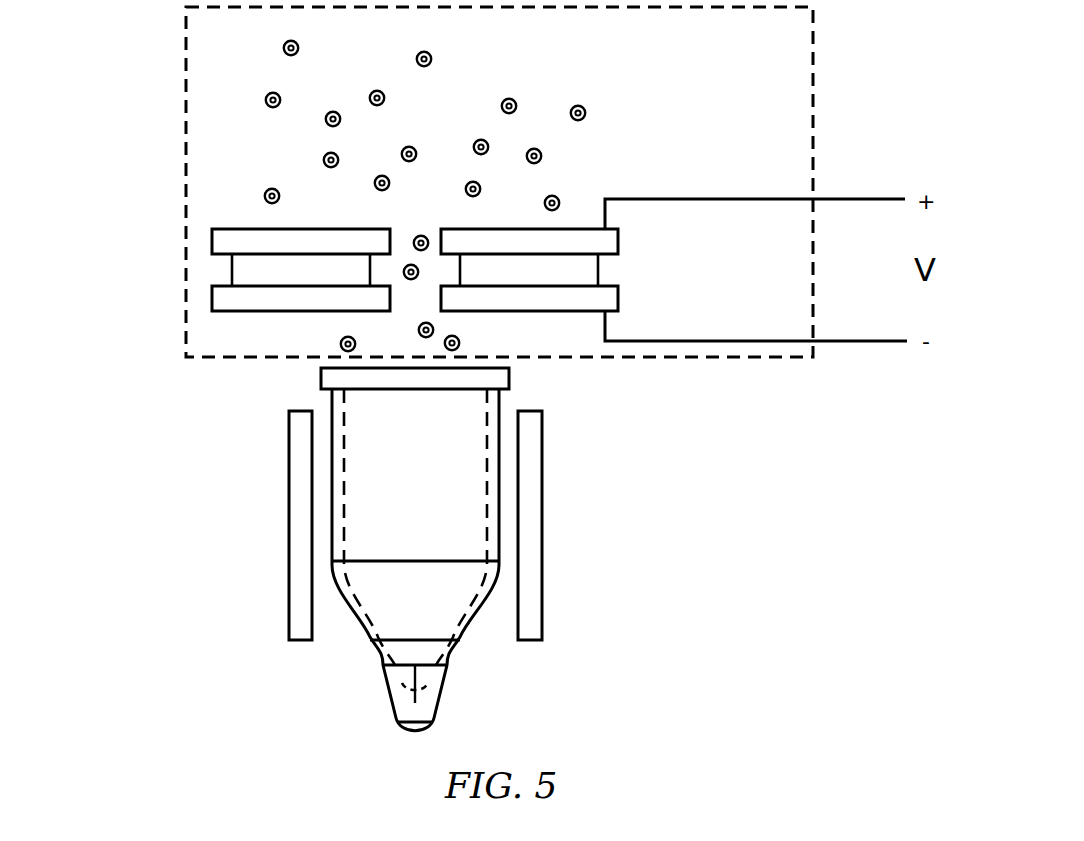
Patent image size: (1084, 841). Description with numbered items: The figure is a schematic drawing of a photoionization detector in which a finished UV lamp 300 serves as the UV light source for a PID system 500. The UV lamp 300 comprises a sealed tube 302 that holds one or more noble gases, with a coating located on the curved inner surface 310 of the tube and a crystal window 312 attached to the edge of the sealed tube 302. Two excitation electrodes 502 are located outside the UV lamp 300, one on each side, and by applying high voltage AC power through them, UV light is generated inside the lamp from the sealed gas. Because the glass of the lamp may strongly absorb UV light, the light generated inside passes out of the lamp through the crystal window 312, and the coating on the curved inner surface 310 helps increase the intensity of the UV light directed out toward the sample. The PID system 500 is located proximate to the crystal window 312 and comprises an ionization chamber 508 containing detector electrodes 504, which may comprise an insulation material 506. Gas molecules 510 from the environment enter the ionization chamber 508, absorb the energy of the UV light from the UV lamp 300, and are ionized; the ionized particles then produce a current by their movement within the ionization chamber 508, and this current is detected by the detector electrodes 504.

The UV lamp 300 is at (358, 688).
The sealed tube 302 is at (470, 630).
The curved inner surface 310 is at (487, 447).
The crystal window 312 is at (325, 376).
The PID system 500 is at (148, 94).
The excitation electrodes 502 is at (298, 486).
The detector electrodes 504 is at (210, 241).
The insulation material 506 is at (230, 268).
The ionization chamber 508 is at (816, 45).
The gas molecules 510 is at (425, 212).